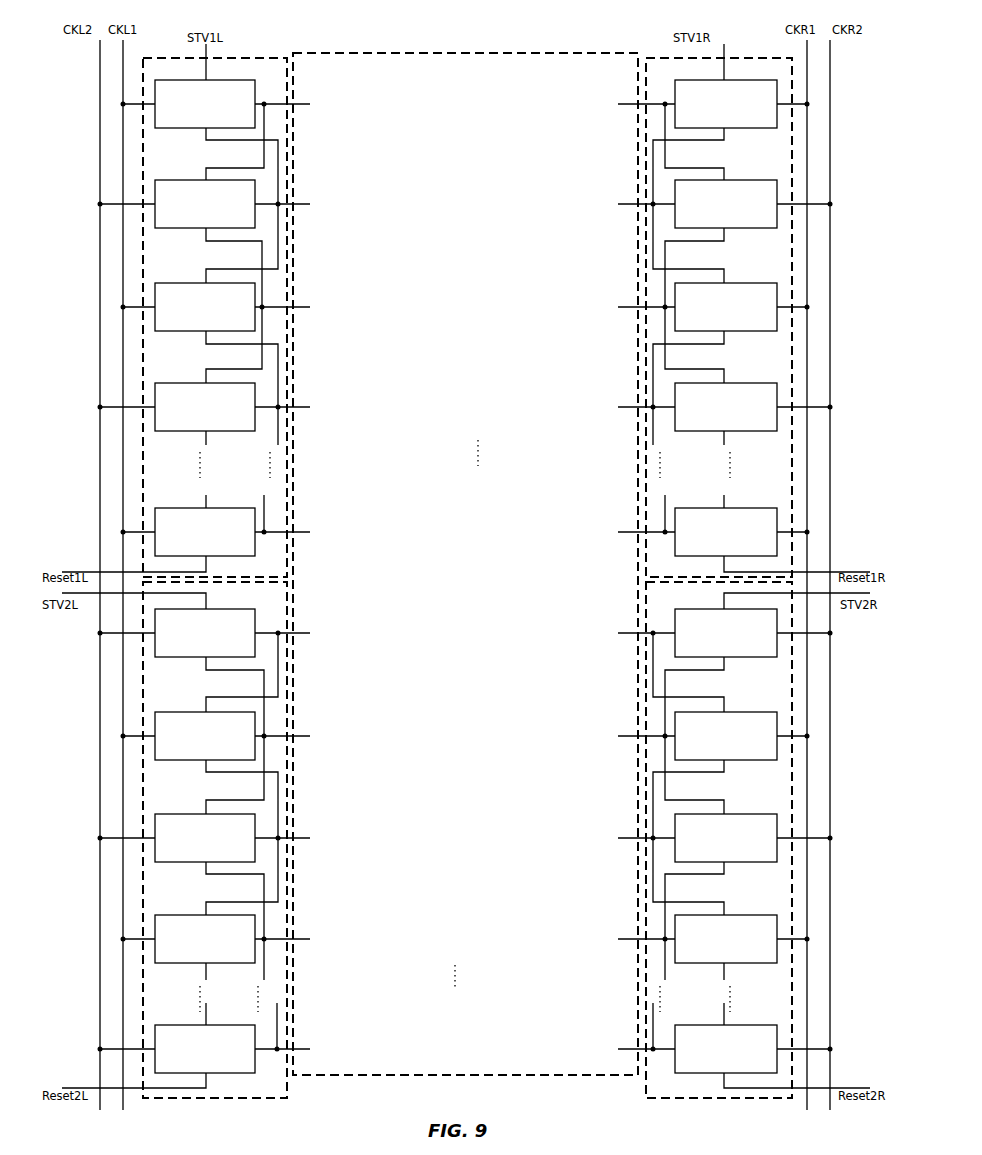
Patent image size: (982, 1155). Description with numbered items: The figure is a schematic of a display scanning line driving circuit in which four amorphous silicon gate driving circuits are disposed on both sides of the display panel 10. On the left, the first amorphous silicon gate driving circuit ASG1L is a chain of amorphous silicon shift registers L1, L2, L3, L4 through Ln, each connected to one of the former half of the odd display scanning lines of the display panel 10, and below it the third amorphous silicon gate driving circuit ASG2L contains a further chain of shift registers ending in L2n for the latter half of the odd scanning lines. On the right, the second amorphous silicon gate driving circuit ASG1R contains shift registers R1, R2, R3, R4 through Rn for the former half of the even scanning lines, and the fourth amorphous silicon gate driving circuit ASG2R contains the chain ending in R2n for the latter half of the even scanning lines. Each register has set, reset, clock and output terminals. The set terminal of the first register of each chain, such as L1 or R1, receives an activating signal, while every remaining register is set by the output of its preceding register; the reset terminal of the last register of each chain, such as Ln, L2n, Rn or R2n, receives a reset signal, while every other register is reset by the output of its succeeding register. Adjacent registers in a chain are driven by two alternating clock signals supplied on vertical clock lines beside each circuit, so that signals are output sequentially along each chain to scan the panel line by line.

The display panel 10 is at (311, 67).
The first amorphous silicon gate driving circuit ASG1L is at (143, 163).
The third amorphous silicon gate driving circuit ASG2L is at (143, 763).
The second amorphous silicon gate driving circuit ASG1R is at (792, 163).
The fourth amorphous silicon gate driving circuit ASG2R is at (792, 763).
The first amorphous silicon shift register L1 is at (216, 134).
The amorphous silicon shift register L2 is at (204, 236).
The amorphous silicon shift register L3 is at (216, 337).
The left shift register stage 4 L4 is at (204, 423).
The last amorphous silicon shift register Ln is at (186, 532).
The last amorphous silicon shift register L2n is at (186, 1045).
The first amorphous silicon shift register R1 is at (714, 134).
The amorphous silicon shift register R2 is at (725, 236).
The amorphous silicon shift register R3 is at (714, 337).
The right shift register stage 4 R4 is at (725, 423).
The last amorphous silicon shift register Rn is at (744, 532).
The last amorphous silicon shift register R2n is at (744, 1045).